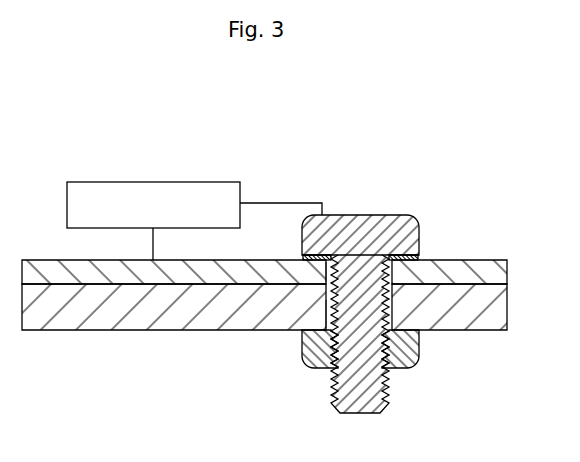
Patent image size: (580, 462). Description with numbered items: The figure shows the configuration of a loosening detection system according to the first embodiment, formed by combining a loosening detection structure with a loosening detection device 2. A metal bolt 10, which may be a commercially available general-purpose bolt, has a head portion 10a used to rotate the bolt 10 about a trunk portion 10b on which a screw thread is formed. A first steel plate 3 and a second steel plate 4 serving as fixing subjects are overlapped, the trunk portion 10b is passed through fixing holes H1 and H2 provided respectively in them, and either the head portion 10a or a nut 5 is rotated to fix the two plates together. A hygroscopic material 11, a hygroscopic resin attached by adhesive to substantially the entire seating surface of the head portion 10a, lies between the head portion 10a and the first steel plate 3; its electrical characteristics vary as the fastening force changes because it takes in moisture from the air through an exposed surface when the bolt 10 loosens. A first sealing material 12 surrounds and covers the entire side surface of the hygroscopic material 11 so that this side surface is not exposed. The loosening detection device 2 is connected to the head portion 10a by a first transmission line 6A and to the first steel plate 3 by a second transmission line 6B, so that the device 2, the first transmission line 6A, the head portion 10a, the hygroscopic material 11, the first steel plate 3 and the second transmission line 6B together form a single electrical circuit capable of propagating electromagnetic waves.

The loosening detection device 2 is at (156, 182).
The first steel plate 3 is at (509, 273).
The second steel plate 4 is at (509, 311).
The nut 5 is at (419, 354).
The first transmission line 6A is at (271, 203).
The second transmission line 6B is at (160, 246).
The bolt 10 is at (369, 294).
The head portion 10a is at (402, 222).
The trunk portion 10b is at (390, 392).
The hygroscopic material 11 is at (304, 253).
The first sealing material 12 is at (307, 257).
The fixing hole H1 is at (327, 283).
The fixing hole H2 is at (327, 330).